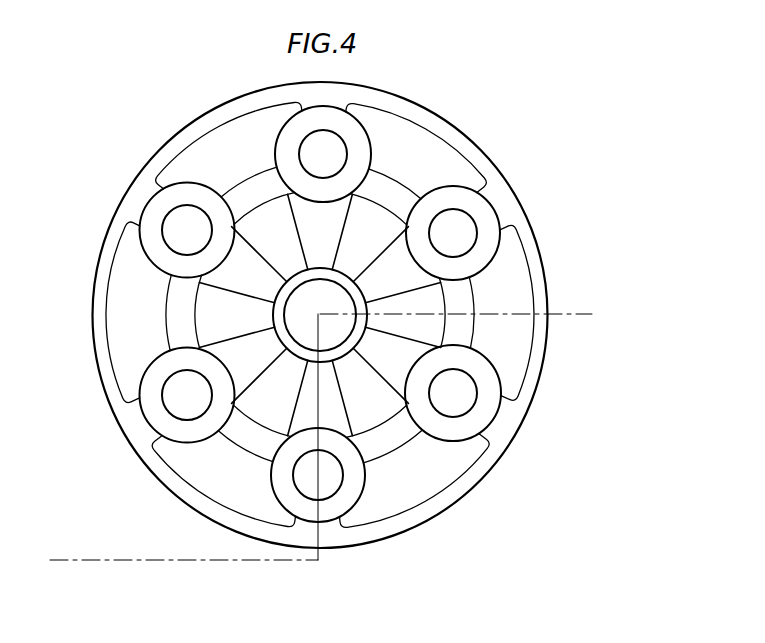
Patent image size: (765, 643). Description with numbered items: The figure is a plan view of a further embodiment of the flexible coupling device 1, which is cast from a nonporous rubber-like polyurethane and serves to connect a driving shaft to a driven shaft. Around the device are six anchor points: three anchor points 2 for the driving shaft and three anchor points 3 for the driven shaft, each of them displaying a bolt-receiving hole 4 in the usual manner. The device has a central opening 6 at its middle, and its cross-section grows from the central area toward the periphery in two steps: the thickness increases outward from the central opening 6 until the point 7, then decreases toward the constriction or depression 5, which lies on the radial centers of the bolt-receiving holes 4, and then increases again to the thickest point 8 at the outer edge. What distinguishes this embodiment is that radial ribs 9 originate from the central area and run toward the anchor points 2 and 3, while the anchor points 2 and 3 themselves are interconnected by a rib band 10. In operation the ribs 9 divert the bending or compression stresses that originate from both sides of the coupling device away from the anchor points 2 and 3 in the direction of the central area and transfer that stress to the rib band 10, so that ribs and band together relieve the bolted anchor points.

The flexible coupling device 1 is at (468, 124).
The anchor points for the driving shaft 2 is at (155, 206).
The anchor points for the driven shaft 3 is at (291, 128).
The bolt-receiving holes 4 is at (190, 204).
The depression 5 is at (568, 322).
The central opening 6 is at (343, 303).
The point of first maximum thickness 7 is at (376, 430).
The thickest point 8 is at (397, 104).
The radial ribs 9 is at (300, 224).
The rib band 10 is at (281, 326).